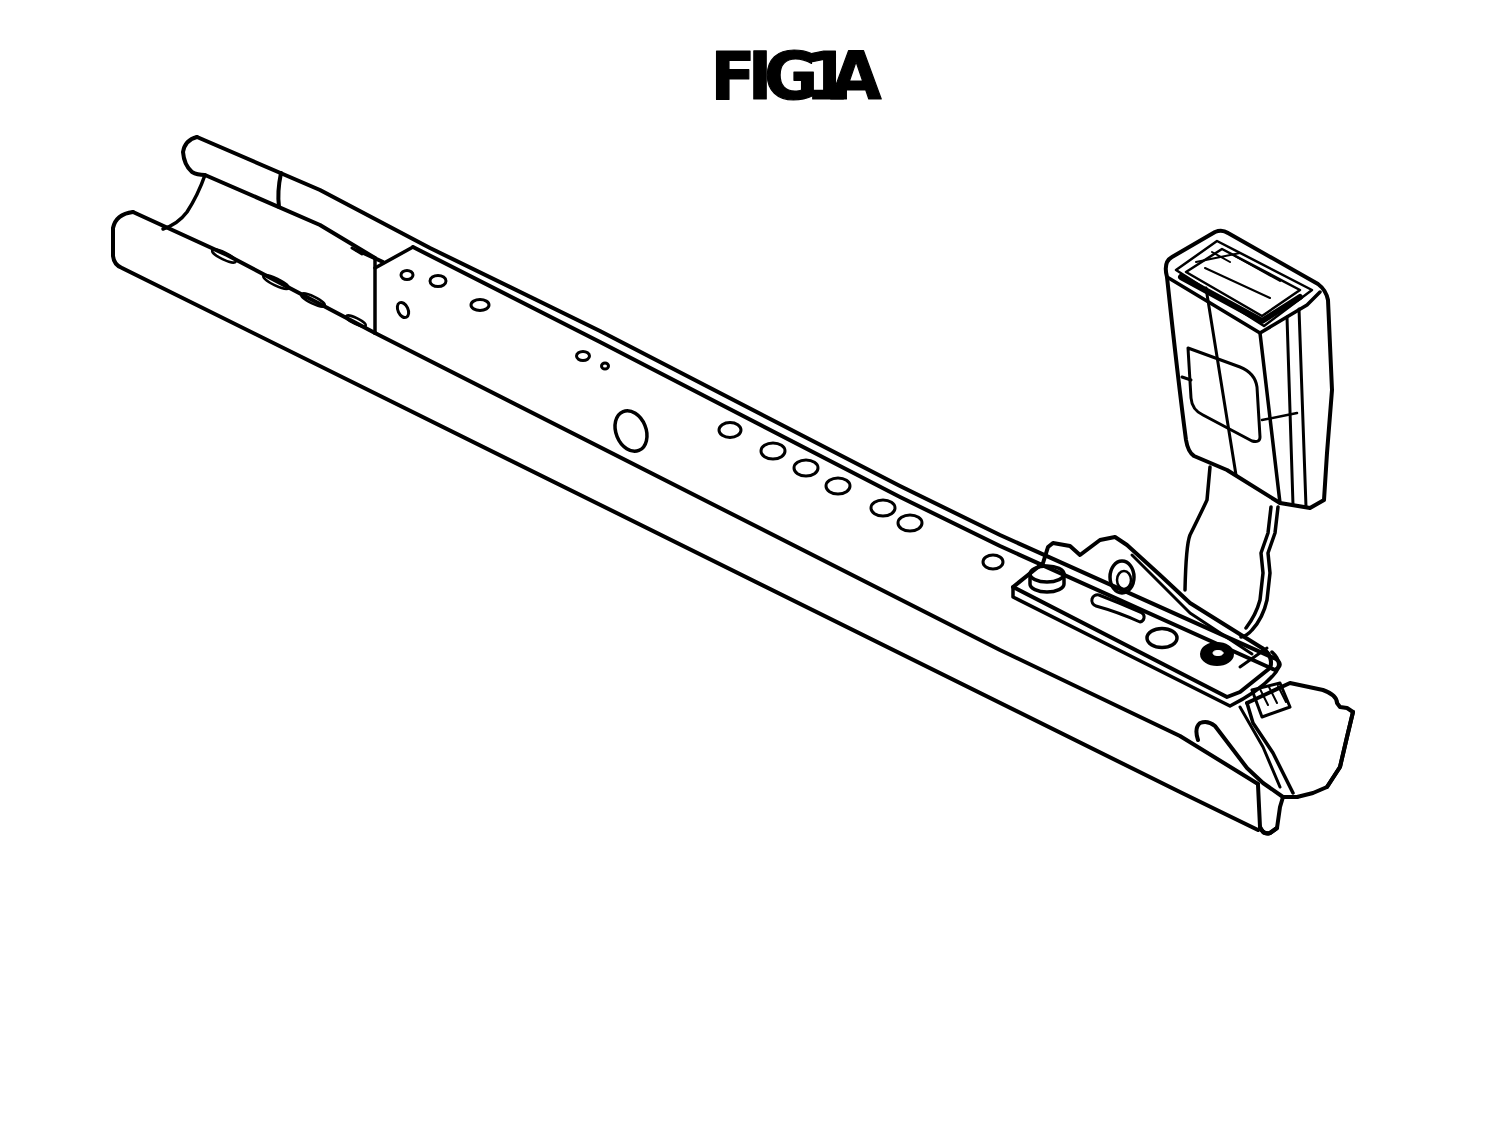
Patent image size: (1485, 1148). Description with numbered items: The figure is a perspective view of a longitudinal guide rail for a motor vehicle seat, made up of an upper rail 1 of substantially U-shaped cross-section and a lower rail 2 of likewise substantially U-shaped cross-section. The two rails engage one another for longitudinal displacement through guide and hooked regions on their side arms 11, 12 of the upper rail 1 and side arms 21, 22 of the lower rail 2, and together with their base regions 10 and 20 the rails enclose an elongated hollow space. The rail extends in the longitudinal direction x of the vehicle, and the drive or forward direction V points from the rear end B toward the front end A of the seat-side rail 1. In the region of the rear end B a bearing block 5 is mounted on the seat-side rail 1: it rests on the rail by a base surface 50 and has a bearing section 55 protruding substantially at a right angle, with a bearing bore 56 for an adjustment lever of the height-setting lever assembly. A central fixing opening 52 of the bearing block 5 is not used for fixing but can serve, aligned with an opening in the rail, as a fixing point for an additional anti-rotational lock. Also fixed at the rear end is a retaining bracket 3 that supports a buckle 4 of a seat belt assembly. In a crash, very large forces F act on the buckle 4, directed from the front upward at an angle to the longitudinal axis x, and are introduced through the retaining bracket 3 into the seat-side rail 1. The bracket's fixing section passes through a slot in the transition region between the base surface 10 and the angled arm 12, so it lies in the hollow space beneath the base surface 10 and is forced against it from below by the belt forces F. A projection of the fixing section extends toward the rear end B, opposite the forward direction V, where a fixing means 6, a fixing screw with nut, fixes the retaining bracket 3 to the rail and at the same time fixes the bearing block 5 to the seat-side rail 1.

The upper rail 1 is at (516, 288).
The lower rail 2 is at (338, 382).
The retaining bracket 3 is at (1295, 563).
The belt buckle 4 is at (1355, 377).
The bearing block 5 is at (1122, 522).
The fixing means 6 is at (1210, 664).
The base region 10 is at (1340, 750).
The side arm 11 is at (1225, 735).
The side arm 12 is at (1277, 679).
The base region 20 is at (1277, 832).
The side arm 21 is at (1260, 832).
The side arm 22 is at (1334, 780).
The base surface 50 is at (1274, 650).
The central fixing opening 52 is at (1170, 630).
The bearing section 55 is at (1085, 570).
The bearing bore 56 is at (1125, 575).
The front end A is at (355, 247).
The rear end B is at (1303, 798).
The belt forces F is at (1172, 218).
The forward direction V is at (672, 305).
The longitudinal direction x is at (700, 619).